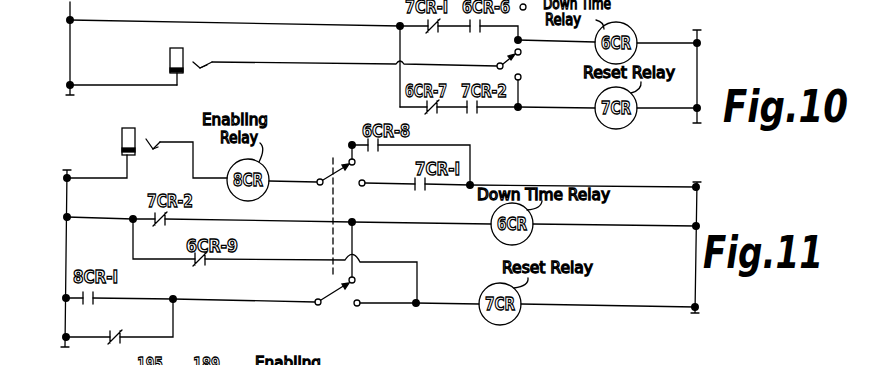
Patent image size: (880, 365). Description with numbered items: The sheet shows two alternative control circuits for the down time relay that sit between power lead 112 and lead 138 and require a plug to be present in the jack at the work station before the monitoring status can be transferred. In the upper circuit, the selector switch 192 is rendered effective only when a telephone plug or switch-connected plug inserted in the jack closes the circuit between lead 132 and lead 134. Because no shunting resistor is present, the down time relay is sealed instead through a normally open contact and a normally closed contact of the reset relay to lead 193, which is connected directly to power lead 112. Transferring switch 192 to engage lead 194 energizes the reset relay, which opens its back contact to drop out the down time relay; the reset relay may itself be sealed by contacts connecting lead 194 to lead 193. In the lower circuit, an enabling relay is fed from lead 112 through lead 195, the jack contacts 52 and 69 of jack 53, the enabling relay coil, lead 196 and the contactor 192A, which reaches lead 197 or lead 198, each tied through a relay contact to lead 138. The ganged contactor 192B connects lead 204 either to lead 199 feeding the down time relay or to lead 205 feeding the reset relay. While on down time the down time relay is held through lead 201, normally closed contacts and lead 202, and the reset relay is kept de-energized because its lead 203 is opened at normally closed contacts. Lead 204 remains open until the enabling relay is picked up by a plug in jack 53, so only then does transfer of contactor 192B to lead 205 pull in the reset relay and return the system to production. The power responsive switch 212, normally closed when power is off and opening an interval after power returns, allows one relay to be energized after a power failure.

In FIG. 10, the power lead 112 is at (68, 38).
In FIG. 11, the power lead 112 is at (66, 198).
In FIG. 10, the lead 138 is at (700, 69).
In FIG. 11, the lead 138 is at (700, 209).
In FIG. 10, the lead 193 is at (276, 22).
In FIG. 10, the lead 132 is at (140, 84).
In FIG. 10, the lead 134 is at (289, 66).
In FIG. 10, the jack contact 52 is at (170, 58).
In FIG. 11, the jack contact 52 is at (121, 135).
In FIG. 10, the jack 53 is at (193, 57).
In FIG. 11, the jack 53 is at (146, 134).
In FIG. 10, the jack contact 69 is at (200, 68).
In FIG. 11, the jack contact 69 is at (153, 149).
In FIG. 10, the selector switch 192 is at (508, 60).
In FIG. 10, the lead 194 is at (540, 105).
In FIG. 11, the lead 195 is at (117, 178).
In FIG. 11, the lead 196 is at (295, 181).
In FIG. 11, the contactor 192A is at (336, 168).
In FIG. 11, the ganged contactor 192B is at (334, 292).
In FIG. 11, the lead 197 is at (353, 142).
In FIG. 11, the lead 198 is at (373, 178).
In FIG. 11, the lead 199 is at (355, 241).
In FIG. 11, the lead 201 is at (80, 216).
In FIG. 11, the lead 202 is at (270, 219).
In FIG. 11, the lead 203 is at (147, 259).
In FIG. 11, the lead 204 is at (226, 299).
In FIG. 11, the lead 205 is at (370, 301).
In FIG. 11, the power responsive switch 212 is at (117, 333).